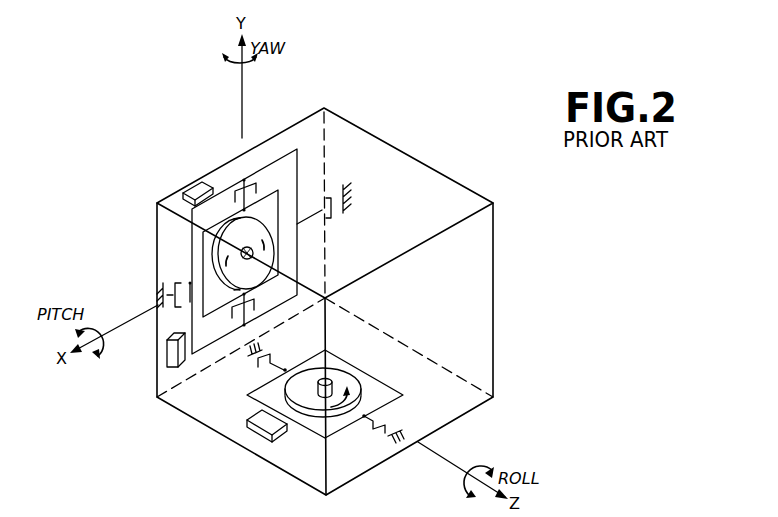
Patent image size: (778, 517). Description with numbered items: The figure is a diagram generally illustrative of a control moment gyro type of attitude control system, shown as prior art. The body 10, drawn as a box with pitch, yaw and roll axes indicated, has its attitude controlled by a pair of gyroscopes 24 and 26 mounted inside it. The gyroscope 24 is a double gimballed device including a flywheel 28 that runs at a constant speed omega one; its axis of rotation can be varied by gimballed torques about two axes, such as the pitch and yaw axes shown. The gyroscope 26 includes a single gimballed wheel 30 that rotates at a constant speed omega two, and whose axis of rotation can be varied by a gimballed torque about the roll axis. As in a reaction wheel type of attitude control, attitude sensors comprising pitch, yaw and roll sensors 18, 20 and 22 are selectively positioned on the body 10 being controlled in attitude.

The body 10 is at (413, 173).
The pitch sensor 18 is at (195, 183).
The yaw sensor 20 is at (167, 356).
The roll sensor 22 is at (268, 432).
The gyroscope 24 is at (292, 142).
The gyroscope 26 is at (230, 413).
The flywheel 28 is at (253, 253).
The single gimballed wheel 30 is at (348, 380).